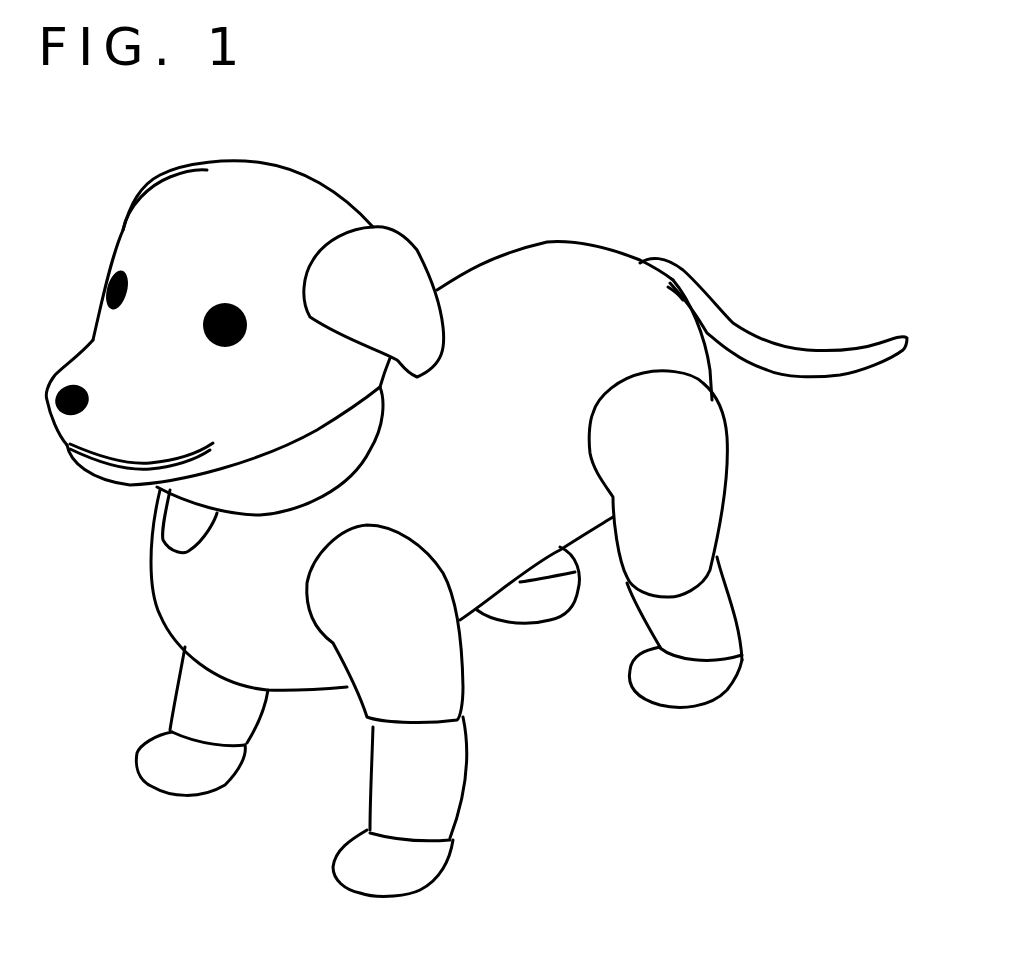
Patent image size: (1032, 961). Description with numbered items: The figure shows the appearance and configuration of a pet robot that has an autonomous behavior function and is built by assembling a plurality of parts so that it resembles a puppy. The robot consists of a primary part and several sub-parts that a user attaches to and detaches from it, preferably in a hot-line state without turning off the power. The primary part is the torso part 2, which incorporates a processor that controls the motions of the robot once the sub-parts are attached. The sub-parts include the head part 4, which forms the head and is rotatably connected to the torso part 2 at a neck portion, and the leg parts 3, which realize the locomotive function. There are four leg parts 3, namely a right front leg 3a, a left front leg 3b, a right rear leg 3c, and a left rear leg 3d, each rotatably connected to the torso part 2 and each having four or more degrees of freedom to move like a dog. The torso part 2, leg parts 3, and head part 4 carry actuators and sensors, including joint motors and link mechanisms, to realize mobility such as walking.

The head part 4 is at (257, 196).
The torso part 2 is at (580, 283).
The leg parts 3 is at (547, 903).
The right front leg 3a is at (243, 722).
The left front leg 3b is at (427, 777).
The right rear leg 3c is at (563, 605).
The left rear leg 3d is at (713, 620).